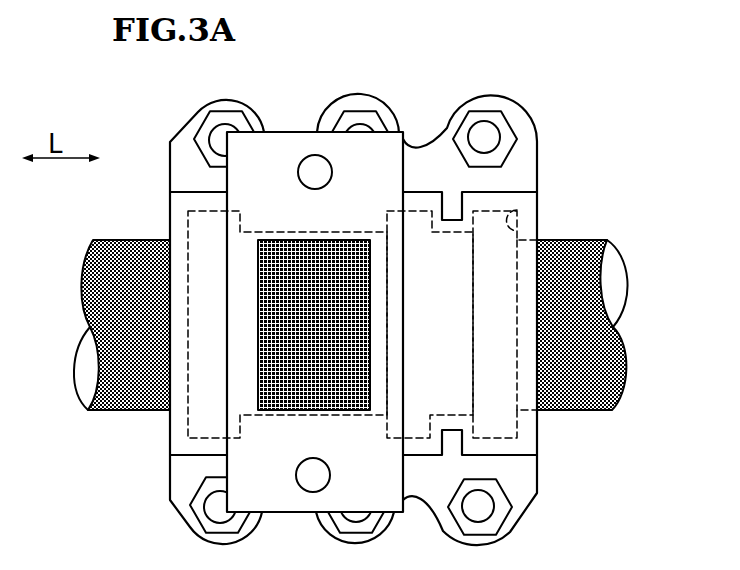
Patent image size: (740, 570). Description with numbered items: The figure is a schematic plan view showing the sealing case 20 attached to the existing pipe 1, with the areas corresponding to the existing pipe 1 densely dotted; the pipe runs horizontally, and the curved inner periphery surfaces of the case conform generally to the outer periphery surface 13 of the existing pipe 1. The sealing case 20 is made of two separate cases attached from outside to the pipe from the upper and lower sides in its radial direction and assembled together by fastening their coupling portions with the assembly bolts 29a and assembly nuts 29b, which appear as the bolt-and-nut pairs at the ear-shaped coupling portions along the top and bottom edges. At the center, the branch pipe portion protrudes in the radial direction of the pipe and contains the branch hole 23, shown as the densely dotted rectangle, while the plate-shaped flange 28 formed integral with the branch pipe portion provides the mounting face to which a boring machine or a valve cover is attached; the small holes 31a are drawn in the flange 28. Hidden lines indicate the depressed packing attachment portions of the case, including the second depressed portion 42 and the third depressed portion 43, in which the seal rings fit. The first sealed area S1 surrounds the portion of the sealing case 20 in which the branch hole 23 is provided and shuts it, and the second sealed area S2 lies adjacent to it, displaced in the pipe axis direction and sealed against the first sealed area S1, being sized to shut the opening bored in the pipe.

The existing pipe 1 is at (119, 242).
The outer periphery surface 13 is at (110, 404).
The sealing case 20 is at (133, 146).
The branch hole 23 is at (266, 248).
The flange 28 is at (240, 461).
The assembly bolts 29a is at (220, 137).
The assembly nuts 29b is at (233, 112).
The positioning hole 31a is at (330, 170).
The second depressed portion 42 is at (408, 222).
The third depressed portion 43 is at (517, 208).
The first sealed area S1 is at (283, 387).
The second sealed area S2 is at (460, 387).